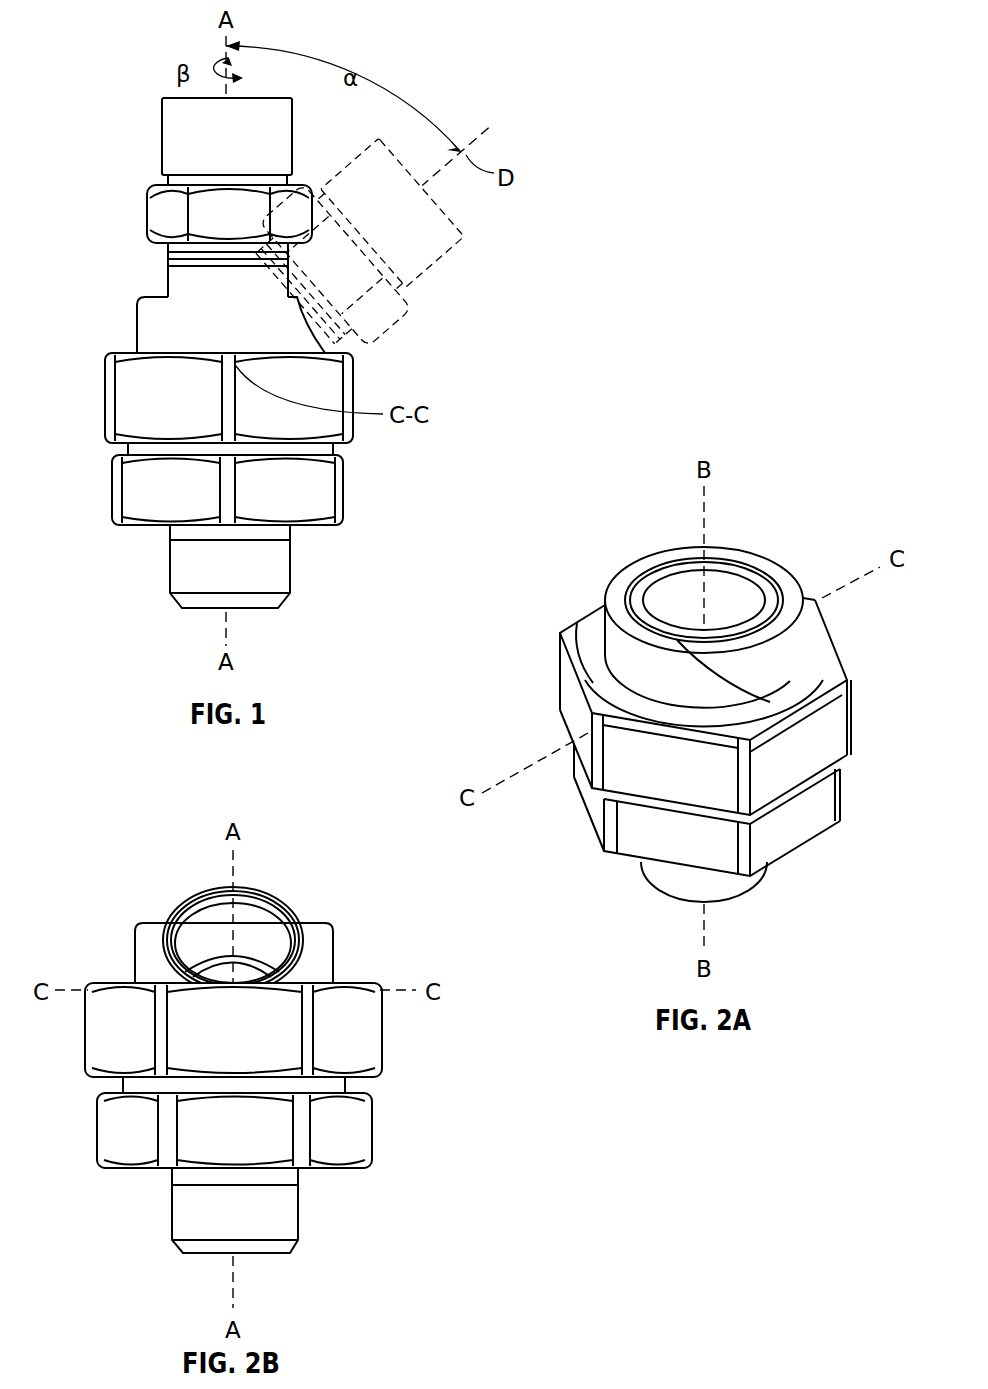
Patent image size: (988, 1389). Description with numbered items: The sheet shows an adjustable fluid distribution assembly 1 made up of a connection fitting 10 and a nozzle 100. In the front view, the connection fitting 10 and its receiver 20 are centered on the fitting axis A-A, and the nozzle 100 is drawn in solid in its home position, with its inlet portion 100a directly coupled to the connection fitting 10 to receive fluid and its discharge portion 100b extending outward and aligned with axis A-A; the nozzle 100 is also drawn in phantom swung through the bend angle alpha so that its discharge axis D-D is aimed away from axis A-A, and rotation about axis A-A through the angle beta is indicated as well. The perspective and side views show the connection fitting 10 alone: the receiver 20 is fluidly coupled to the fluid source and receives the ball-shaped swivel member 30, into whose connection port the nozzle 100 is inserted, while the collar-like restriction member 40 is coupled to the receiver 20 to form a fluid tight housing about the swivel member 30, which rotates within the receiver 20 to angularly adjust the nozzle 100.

In FIG. 1, the assembly 1 is at (522, 295).
In FIG. 1, the connection fitting 10 is at (327, 486).
In FIG. 2A, the connection fitting 10 is at (705, 738).
In FIG. 2B, the connection fitting 10 is at (106, 945).
In FIG. 1, the receiver 20 is at (278, 566).
In FIG. 2A, the receiver 20 is at (828, 795).
In FIG. 2B, the receiver 20 is at (290, 1203).
In FIG. 2A, the swivel member 30 is at (783, 655).
In FIG. 2B, the swivel member 30 is at (291, 904).
In FIG. 1, the restriction member 40 is at (137, 322).
In FIG. 2A, the restriction member 40 is at (623, 573).
In FIG. 2B, the restriction member 40 is at (336, 960).
In FIG. 1, the nozzle 100 is at (458, 232).
In FIG. 1, the inlet portion 100a is at (168, 276).
In FIG. 1, the discharge portion 100b is at (162, 132).